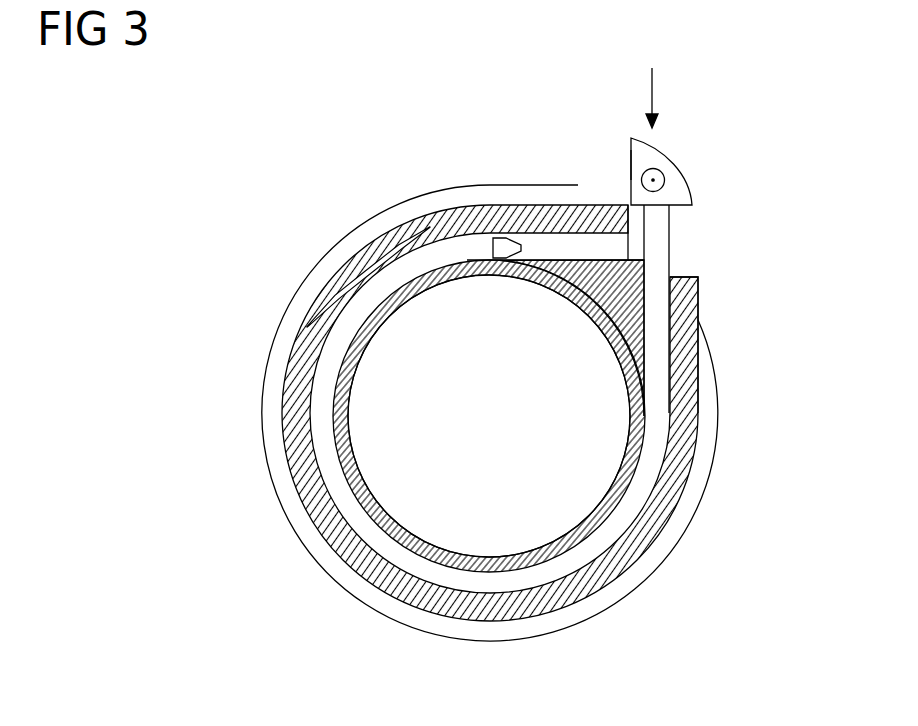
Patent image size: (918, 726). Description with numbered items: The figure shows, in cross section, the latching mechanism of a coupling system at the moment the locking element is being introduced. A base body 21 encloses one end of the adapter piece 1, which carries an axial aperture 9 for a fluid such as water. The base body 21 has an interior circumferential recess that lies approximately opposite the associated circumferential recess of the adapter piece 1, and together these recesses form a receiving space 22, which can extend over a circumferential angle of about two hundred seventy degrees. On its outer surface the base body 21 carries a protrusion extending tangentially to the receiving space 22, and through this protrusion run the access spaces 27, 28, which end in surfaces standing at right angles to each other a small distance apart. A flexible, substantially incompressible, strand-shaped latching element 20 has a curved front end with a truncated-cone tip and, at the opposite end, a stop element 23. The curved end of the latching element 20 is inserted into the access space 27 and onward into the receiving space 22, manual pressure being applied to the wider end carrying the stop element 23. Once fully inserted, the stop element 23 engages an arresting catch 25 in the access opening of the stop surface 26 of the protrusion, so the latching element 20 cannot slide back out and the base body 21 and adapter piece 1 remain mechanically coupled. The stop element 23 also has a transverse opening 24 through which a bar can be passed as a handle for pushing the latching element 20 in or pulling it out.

The adapter piece 1 is at (540, 268).
The axial aperture 9 is at (418, 508).
The latching element 20 is at (663, 240).
The base body 21 is at (702, 447).
The receiving space 22 is at (622, 325).
The stop element 23 is at (690, 203).
The opening 24 is at (655, 183).
The arresting catch 25 is at (631, 165).
The stop surface 26 is at (640, 240).
The access space 27 is at (675, 292).
The access space 28 is at (585, 213).